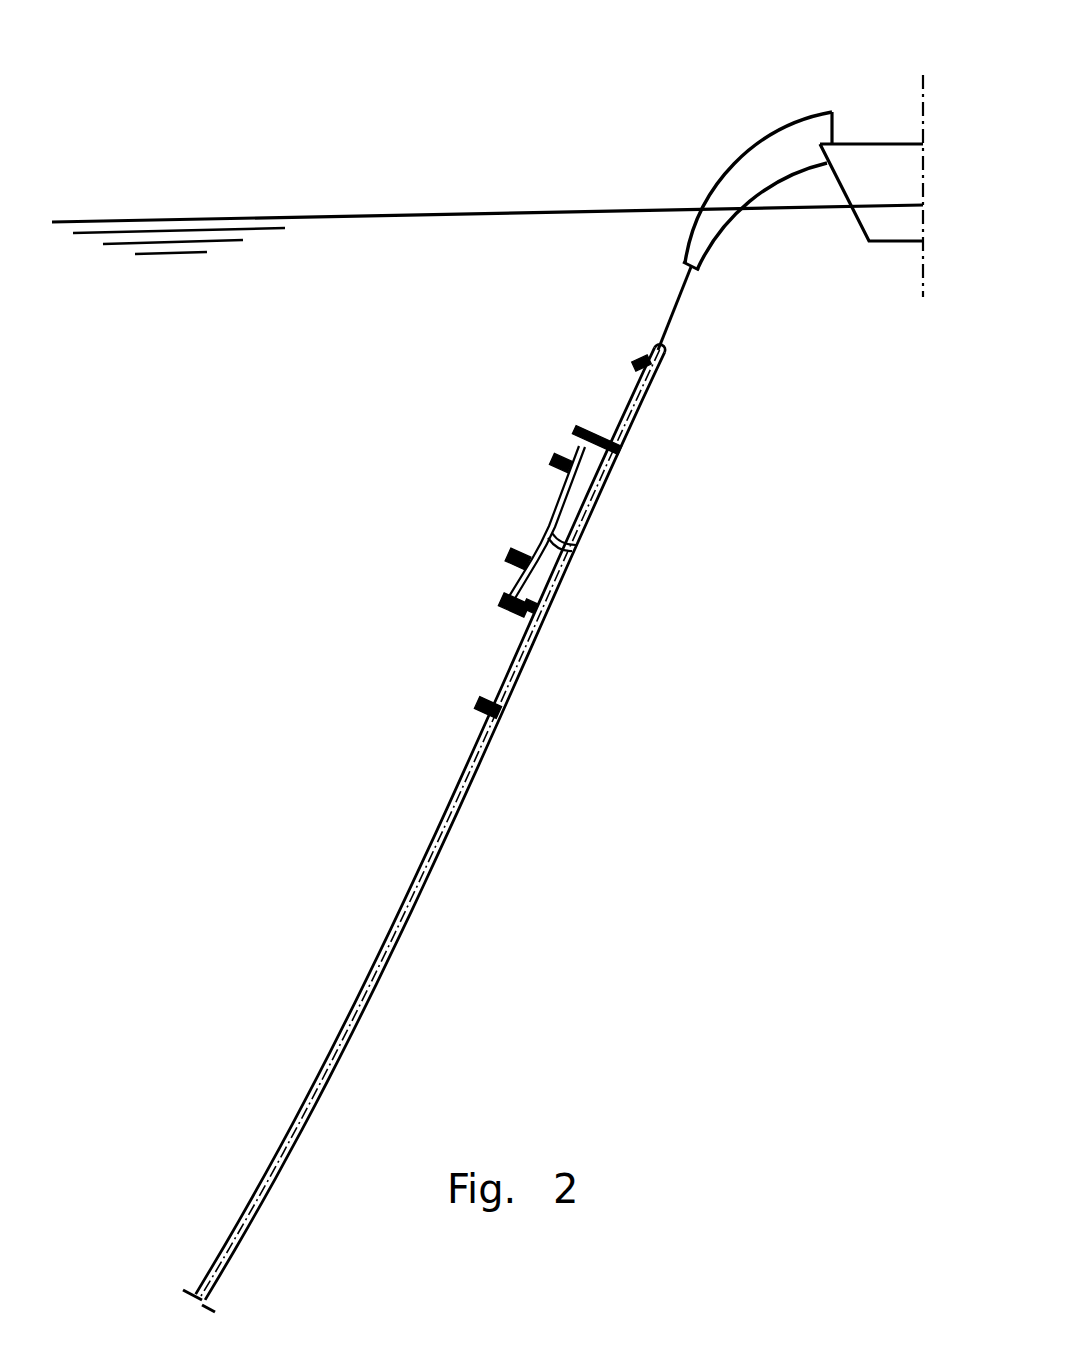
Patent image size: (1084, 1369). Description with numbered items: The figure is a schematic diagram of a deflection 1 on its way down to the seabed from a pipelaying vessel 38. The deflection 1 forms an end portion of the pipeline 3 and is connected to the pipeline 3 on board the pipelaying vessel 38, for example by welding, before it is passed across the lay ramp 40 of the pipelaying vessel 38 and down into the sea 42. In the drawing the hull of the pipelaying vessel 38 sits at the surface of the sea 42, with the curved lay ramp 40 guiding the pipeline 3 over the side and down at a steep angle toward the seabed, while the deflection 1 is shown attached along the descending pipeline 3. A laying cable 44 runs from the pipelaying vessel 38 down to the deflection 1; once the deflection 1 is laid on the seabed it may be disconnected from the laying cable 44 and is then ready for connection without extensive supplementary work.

The deflection pipe 1 is at (550, 532).
The pipeline 3 is at (433, 837).
The pipelaying vessel 38 is at (875, 163).
The lay ramp 40 is at (763, 167).
The sea 42 is at (527, 235).
The laying cable 44 is at (668, 313).